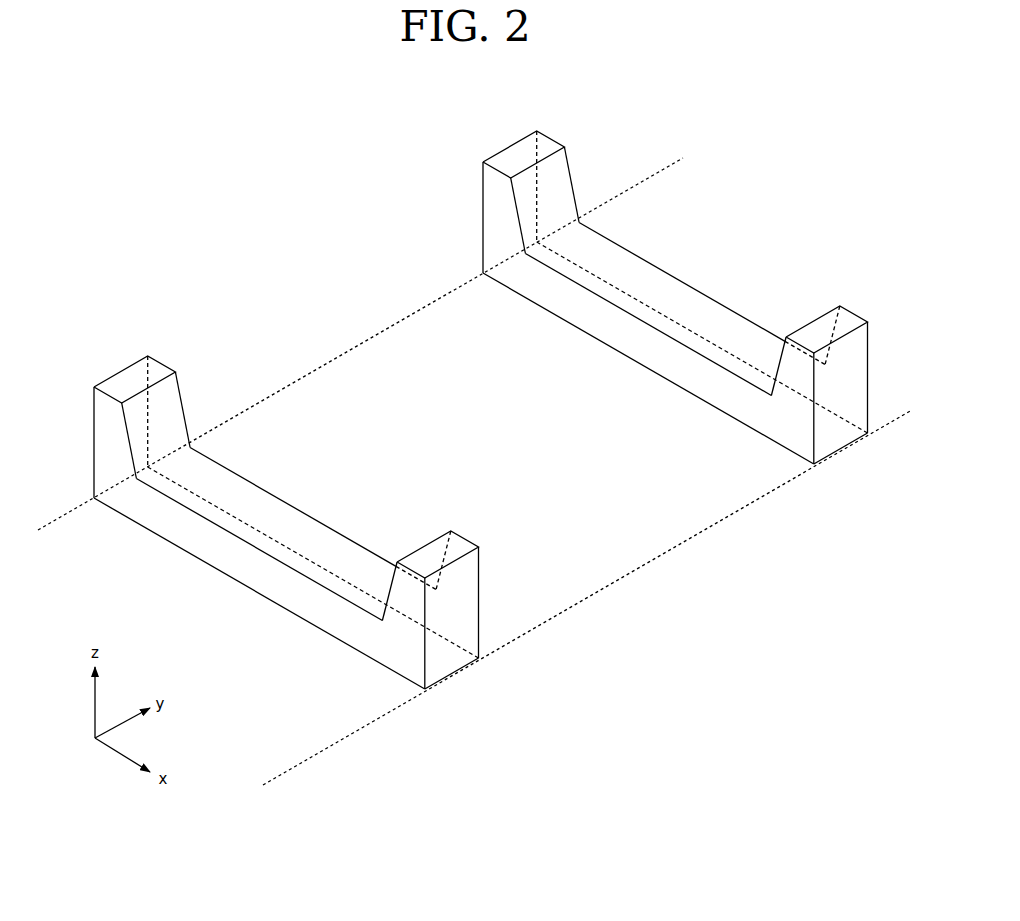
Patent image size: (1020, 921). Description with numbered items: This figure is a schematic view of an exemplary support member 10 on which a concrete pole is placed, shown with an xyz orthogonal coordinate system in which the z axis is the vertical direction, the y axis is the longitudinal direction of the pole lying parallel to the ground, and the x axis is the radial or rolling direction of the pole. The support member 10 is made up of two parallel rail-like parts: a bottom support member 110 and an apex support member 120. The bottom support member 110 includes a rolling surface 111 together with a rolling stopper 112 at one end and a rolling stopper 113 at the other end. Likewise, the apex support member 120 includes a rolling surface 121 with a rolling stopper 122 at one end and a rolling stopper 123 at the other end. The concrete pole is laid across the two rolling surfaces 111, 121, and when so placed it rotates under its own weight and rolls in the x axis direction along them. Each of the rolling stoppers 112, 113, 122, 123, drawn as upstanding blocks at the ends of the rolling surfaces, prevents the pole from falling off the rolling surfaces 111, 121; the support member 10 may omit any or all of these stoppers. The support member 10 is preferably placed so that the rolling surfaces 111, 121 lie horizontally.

The support member 10 is at (163, 262).
The bottom support member 110 is at (133, 372).
The rolling surface 111 is at (305, 542).
The rolling stopper 112 is at (166, 424).
The rolling stopper 113 is at (427, 556).
The apex support member 120 is at (492, 183).
The rolling surface 121 is at (683, 314).
The rolling stopper 122 is at (553, 211).
The rolling stopper 123 is at (814, 333).